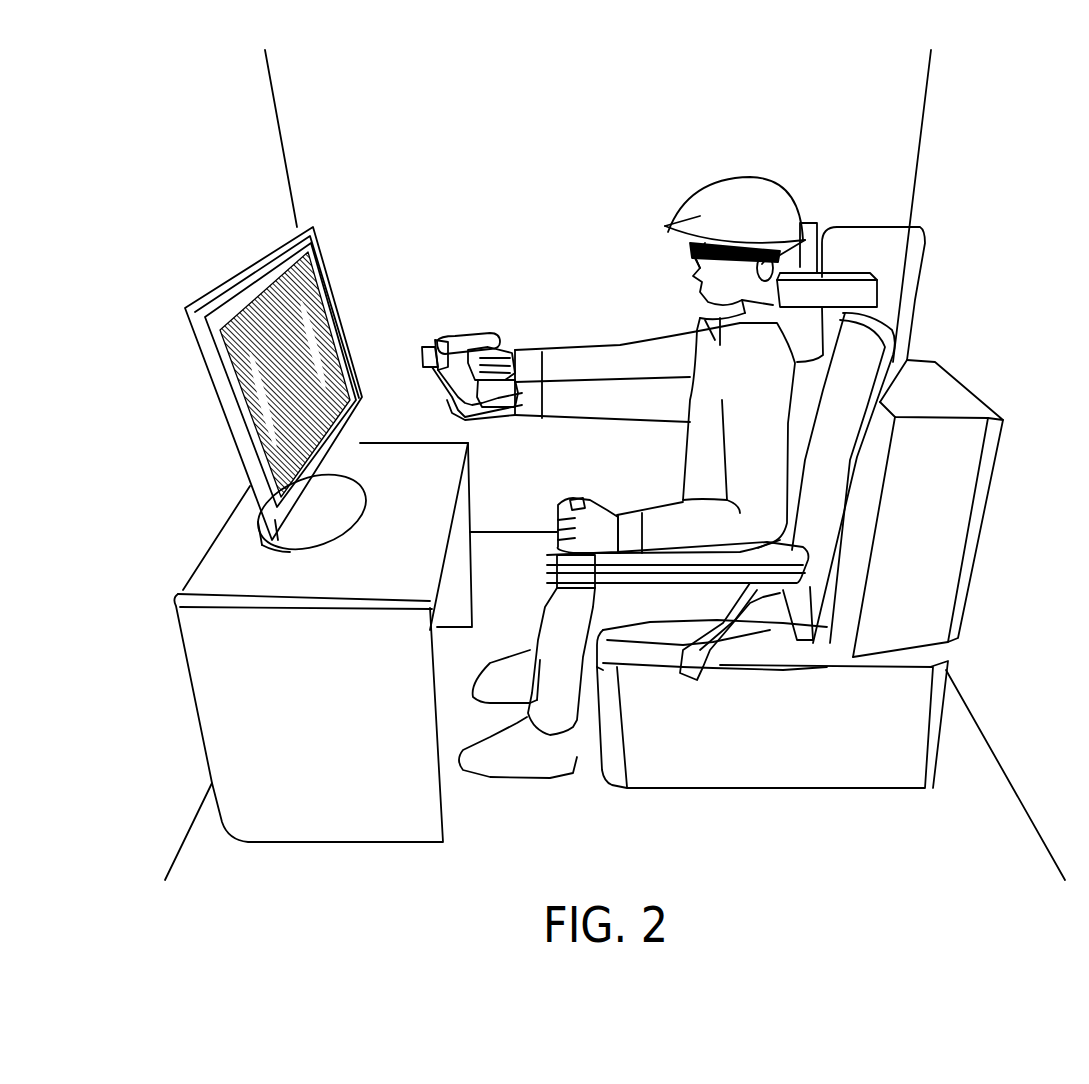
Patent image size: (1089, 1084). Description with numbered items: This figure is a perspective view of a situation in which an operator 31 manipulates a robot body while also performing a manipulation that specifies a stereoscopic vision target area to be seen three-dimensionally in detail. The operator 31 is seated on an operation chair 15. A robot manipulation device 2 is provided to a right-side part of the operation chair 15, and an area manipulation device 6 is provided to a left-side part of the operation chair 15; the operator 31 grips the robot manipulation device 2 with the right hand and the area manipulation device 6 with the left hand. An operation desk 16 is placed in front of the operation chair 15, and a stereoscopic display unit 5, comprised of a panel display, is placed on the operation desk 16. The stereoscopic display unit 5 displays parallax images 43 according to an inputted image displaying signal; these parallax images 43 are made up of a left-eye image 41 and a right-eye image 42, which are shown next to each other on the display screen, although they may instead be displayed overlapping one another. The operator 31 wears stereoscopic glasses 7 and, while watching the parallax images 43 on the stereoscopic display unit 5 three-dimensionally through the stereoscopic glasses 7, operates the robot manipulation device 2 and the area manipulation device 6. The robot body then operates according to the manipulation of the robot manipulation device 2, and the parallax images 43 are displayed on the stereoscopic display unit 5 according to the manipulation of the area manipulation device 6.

The robot manipulation device 2 is at (465, 340).
The stereoscopic display unit 5 is at (279, 362).
The area manipulation device 6 is at (576, 497).
The stereoscopic glasses 7 is at (690, 250).
The operation chair 15 is at (940, 512).
The operation desk 16 is at (233, 577).
The operator 31 is at (742, 177).
The left-eye image 41 is at (248, 302).
The right-eye image 42 is at (290, 275).
The parallax images 43 is at (266, 329).